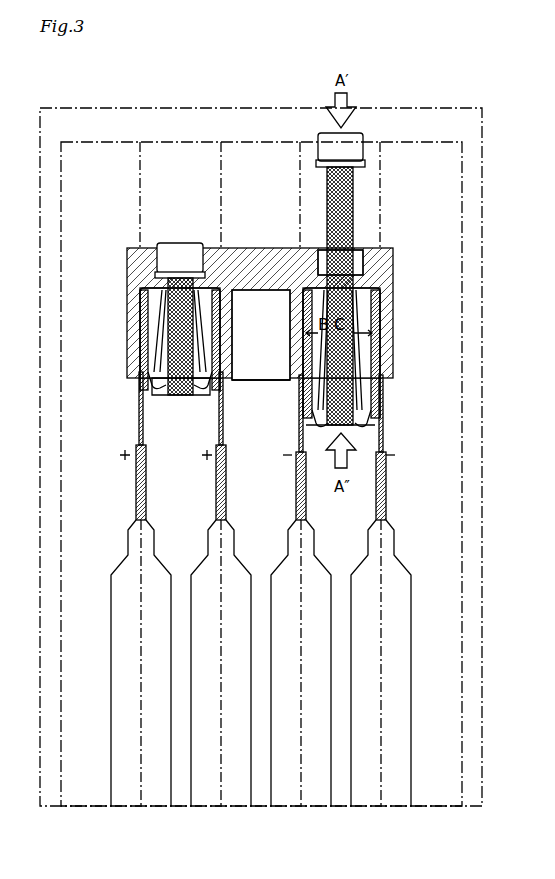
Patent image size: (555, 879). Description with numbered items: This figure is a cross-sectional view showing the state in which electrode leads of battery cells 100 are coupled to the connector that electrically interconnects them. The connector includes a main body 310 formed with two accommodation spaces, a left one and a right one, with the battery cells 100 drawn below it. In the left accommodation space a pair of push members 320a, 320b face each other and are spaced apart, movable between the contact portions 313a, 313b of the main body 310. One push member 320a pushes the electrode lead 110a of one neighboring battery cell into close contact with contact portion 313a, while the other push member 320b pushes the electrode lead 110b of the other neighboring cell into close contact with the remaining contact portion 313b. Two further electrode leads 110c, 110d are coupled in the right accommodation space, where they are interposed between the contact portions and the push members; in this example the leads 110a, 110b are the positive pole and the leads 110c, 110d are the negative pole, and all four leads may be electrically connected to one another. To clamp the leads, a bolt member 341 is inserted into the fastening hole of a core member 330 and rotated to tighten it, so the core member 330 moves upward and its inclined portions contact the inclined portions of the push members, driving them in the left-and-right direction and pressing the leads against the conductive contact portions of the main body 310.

The battery cell 100 is at (124, 795).
The electrode lead 110a is at (138, 410).
The electrode lead 110b is at (224, 408).
The electrode lead 110c is at (298, 434).
The electrode lead 110d is at (384, 432).
The main body 310 is at (142, 245).
The contact portion 313a is at (146, 362).
The contact portion 313b is at (222, 360).
The push member 320a is at (142, 322).
The push member 320b is at (230, 322).
The core member 330 is at (163, 393).
The bolt member 341 is at (180, 243).